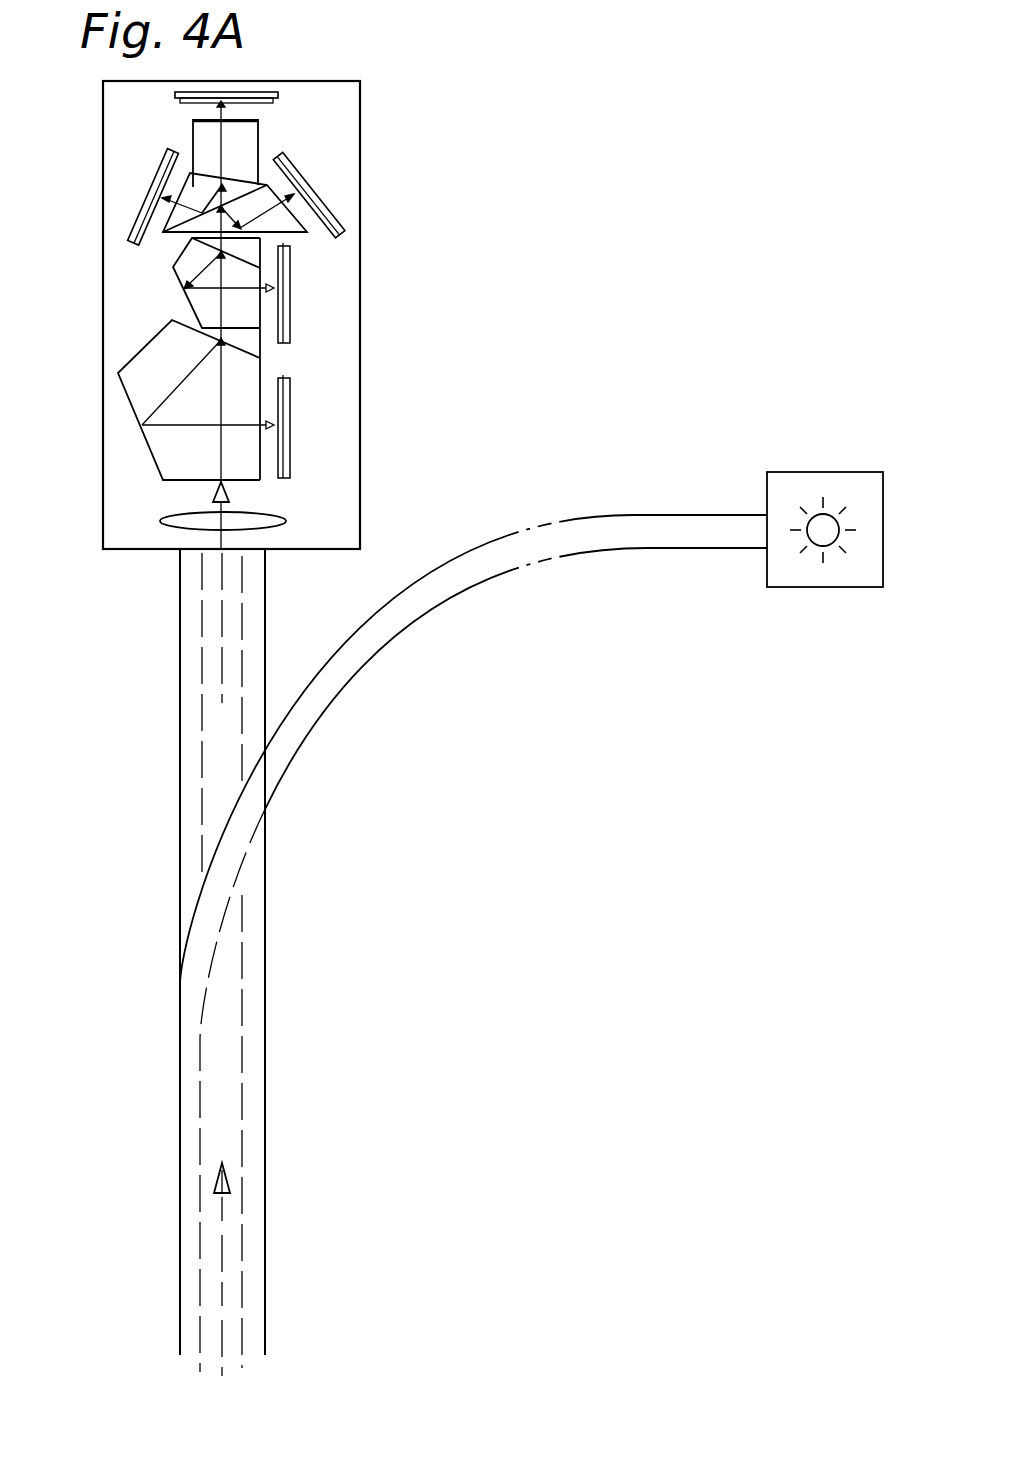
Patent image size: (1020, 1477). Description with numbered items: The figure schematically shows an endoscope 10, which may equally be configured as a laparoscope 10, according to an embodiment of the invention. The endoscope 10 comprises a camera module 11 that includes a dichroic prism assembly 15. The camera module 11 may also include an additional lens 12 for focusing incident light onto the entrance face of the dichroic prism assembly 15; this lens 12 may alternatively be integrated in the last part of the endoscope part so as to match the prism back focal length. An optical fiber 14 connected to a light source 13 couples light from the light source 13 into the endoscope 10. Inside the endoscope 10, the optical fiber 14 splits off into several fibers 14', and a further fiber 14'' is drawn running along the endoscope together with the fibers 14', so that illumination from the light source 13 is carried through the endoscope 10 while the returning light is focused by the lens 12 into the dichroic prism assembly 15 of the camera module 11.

The endoscope 10 is at (266, 960).
The camera module 11 is at (201, 351).
The lens 12 is at (182, 521).
The light source 13 is at (837, 483).
The optical fiber 14 is at (473, 736).
The fibers 14' is at (232, 960).
The collection optical fiber 14'' is at (269, 964).
The dichroic prism assembly 15 is at (141, 400).